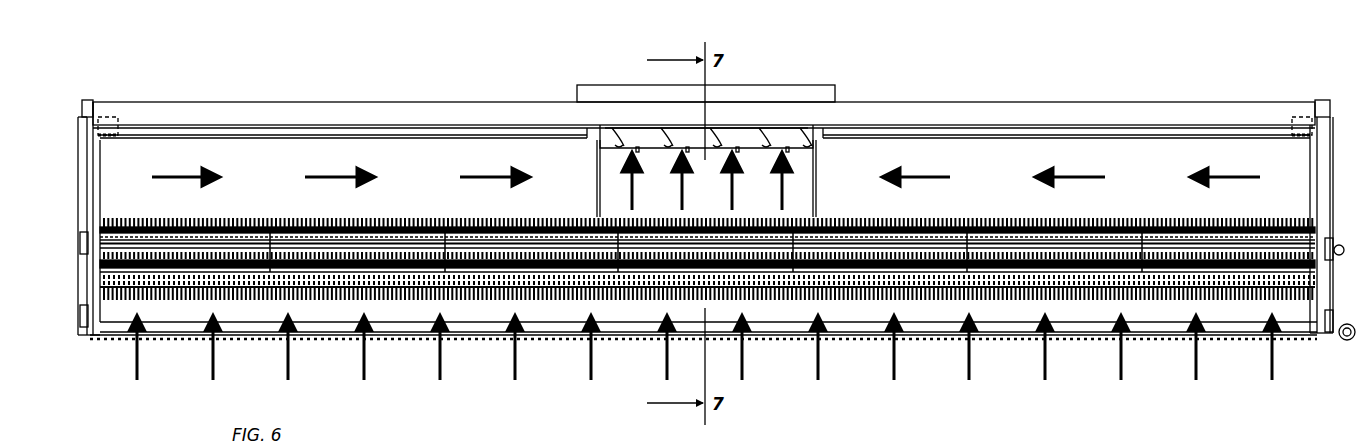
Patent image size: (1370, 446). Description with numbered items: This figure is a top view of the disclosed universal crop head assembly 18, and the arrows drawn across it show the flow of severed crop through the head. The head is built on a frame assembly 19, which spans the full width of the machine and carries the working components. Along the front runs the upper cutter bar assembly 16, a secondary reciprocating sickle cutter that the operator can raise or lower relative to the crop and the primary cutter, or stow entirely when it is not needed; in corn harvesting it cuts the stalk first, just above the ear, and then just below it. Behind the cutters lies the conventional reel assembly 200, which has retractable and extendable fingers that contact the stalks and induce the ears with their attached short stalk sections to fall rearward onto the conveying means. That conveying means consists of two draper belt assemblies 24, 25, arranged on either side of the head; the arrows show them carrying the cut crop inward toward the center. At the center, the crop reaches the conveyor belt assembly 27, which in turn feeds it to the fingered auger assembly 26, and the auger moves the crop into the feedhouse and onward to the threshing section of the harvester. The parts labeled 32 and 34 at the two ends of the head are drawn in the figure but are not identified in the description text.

The upper cutter bar assembly 16 is at (555, 343).
The universal crop head assembly 18 is at (294, 80).
The frame assembly 19 is at (1170, 113).
The draper belt assembly 24 is at (1082, 160).
The draper belt assembly 25 is at (430, 160).
The fingered auger assembly 26 is at (772, 137).
The conveyor belt assembly 27 is at (657, 183).
The right bracket 32 is at (1305, 115).
The left bracket 34 is at (108, 115).
The reel assembly 200 is at (982, 210).